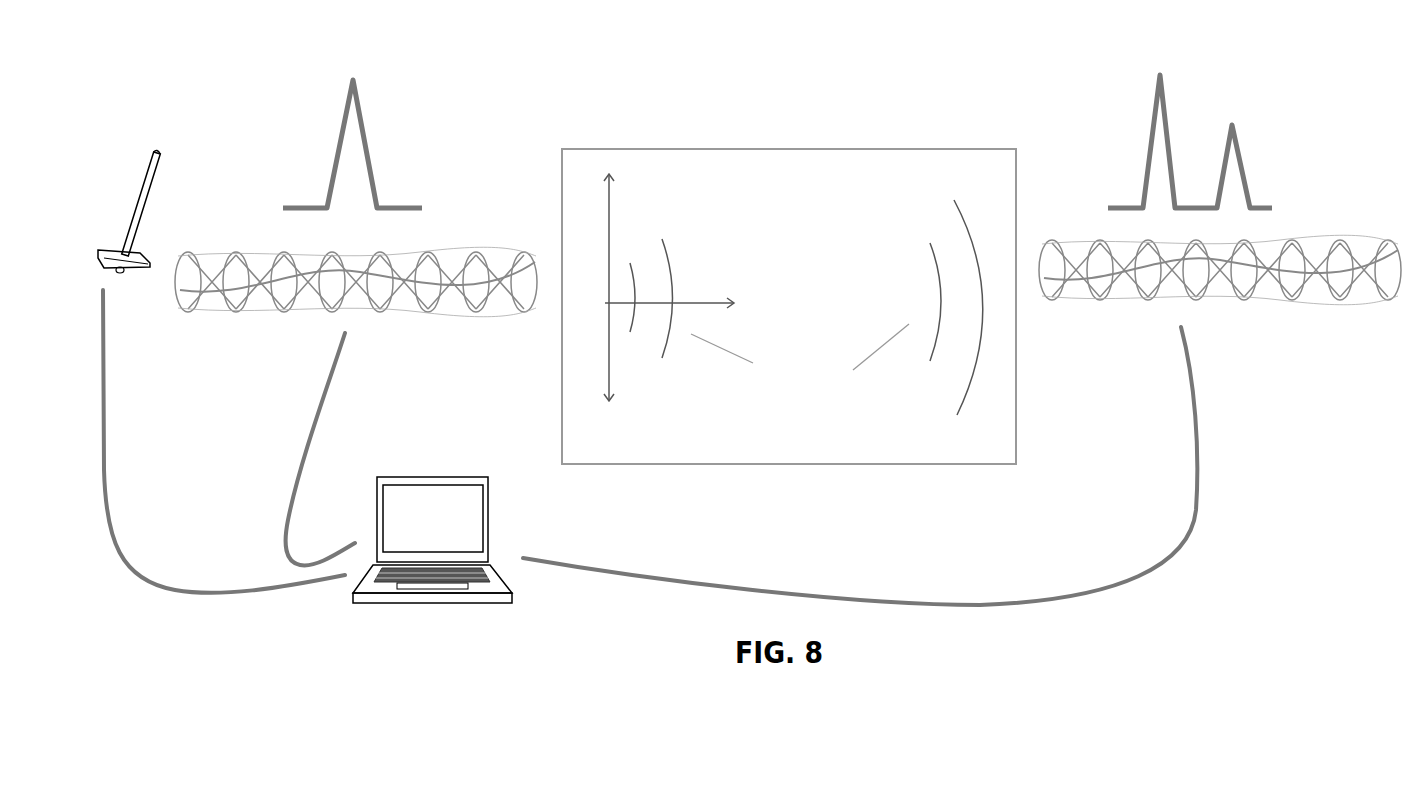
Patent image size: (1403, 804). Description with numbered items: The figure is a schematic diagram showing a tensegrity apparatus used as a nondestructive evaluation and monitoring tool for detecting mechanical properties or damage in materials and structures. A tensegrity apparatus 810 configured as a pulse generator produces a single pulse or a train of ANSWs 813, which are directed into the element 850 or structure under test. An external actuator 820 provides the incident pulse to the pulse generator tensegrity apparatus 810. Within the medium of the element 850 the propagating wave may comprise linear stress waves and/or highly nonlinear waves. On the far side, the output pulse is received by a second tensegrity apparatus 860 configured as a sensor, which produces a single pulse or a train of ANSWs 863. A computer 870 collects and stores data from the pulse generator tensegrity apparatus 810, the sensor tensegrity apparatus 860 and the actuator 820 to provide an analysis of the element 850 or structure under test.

The tensegrity apparatus 810 is at (282, 330).
The ANSWs 813 is at (358, 85).
The external actuator 820 is at (158, 150).
The element 850 is at (727, 140).
The tensegrity apparatus 860 is at (1228, 312).
The ANSWs 863 is at (1140, 95).
The computer 870 is at (425, 493).